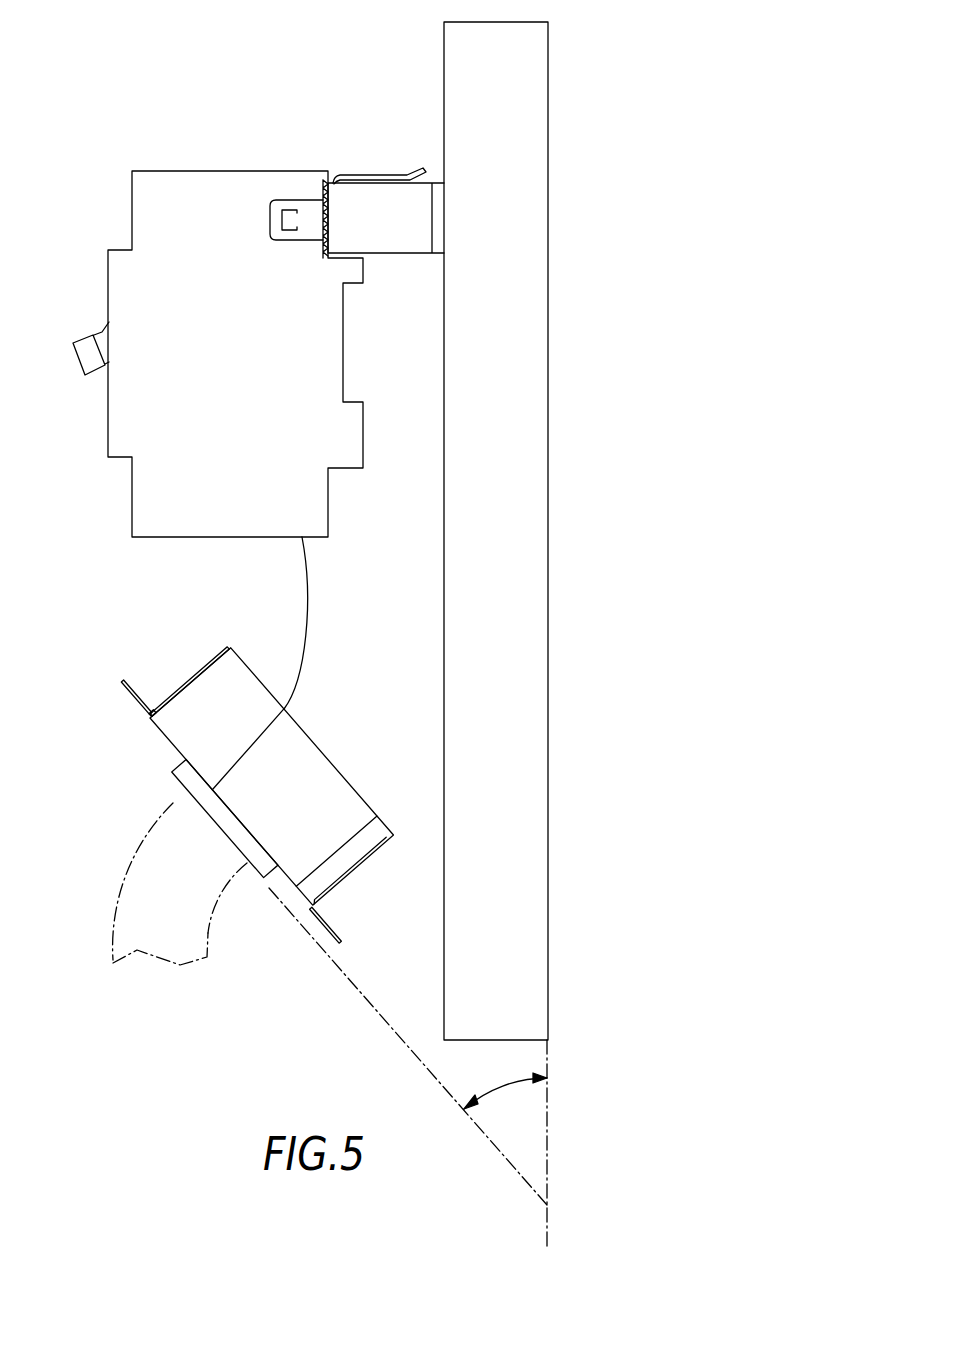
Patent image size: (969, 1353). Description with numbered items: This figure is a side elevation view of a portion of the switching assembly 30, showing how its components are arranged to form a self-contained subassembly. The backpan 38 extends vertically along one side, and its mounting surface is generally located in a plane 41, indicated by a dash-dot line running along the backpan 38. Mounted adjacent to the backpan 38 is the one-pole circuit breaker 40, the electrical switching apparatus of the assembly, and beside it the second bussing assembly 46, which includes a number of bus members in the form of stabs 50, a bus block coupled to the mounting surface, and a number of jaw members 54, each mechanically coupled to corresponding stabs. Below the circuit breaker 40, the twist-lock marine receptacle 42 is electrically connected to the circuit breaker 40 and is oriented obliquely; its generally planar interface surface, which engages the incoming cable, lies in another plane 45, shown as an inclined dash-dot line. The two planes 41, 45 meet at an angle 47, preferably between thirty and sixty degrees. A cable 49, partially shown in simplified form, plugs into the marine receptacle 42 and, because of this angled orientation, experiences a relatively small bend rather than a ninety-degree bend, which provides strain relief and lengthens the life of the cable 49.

The switching assembly 30 is at (371, 630).
The backpan 38 is at (534, 162).
The one-pole circuit breaker 40 is at (182, 178).
The plane 41 is at (548, 1135).
The twist-lock marine receptacle 42 is at (264, 782).
The plane 45 is at (363, 982).
The second bussing assembly 46 is at (423, 155).
The angle 47 is at (508, 1085).
The cable 49 is at (123, 882).
The stab 50 is at (308, 232).
The jaw member 54 is at (398, 245).